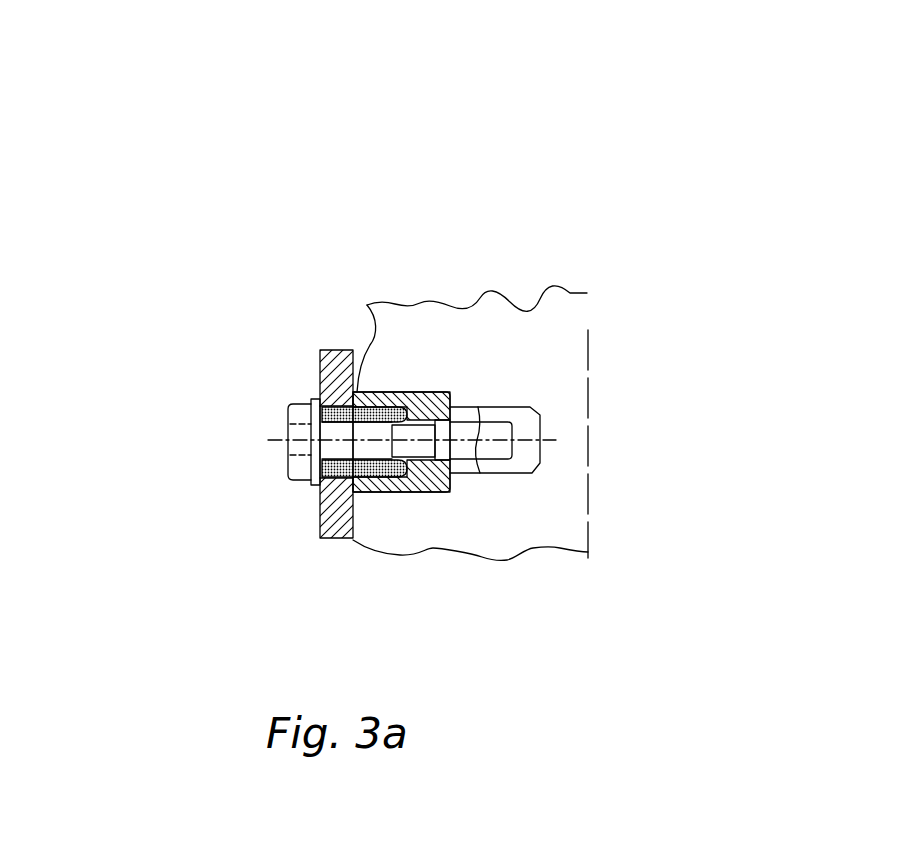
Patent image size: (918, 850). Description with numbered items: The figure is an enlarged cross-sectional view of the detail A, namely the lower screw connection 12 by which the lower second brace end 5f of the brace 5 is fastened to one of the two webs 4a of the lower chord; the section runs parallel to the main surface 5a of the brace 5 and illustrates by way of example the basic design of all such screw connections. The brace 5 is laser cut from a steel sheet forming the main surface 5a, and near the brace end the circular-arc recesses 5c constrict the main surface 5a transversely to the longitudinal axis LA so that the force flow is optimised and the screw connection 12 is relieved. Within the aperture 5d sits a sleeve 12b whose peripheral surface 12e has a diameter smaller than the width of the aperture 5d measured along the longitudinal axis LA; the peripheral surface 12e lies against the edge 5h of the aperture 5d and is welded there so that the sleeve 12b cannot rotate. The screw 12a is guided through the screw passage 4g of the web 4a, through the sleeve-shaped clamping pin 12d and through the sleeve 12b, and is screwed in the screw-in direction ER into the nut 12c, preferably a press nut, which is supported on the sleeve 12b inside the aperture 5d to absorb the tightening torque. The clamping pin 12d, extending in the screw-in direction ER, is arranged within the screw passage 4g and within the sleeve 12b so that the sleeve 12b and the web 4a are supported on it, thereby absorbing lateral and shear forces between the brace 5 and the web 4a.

The detail A is at (433, 120).
The screw connection 12 is at (203, 374).
The screw 12a is at (340, 440).
The sleeve 12b is at (428, 392).
The nut 12c is at (465, 468).
The clamping pin 12d is at (325, 489).
The peripheral surface 12e is at (400, 493).
The web 4a is at (320, 353).
The screw passage 4g is at (314, 388).
The brace 5 is at (497, 327).
The main surface 5a is at (477, 299).
The recess 5c is at (351, 313).
The aperture 5d is at (550, 407).
The second brace end 5f is at (555, 533).
The edge of the aperture 5h is at (498, 473).
The longitudinal axis LA is at (595, 348).
The screw-in direction ER is at (710, 435).